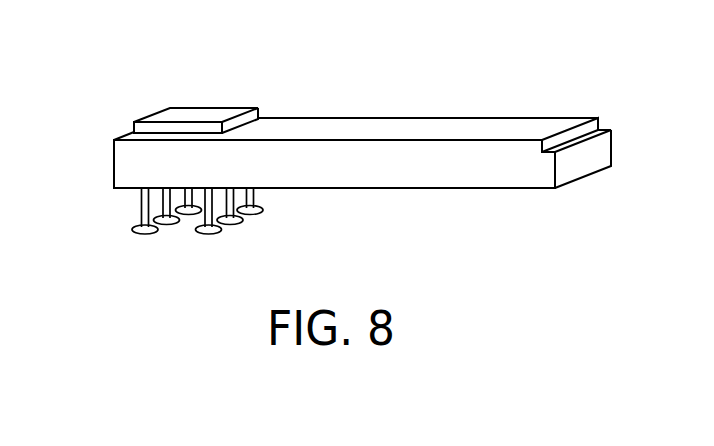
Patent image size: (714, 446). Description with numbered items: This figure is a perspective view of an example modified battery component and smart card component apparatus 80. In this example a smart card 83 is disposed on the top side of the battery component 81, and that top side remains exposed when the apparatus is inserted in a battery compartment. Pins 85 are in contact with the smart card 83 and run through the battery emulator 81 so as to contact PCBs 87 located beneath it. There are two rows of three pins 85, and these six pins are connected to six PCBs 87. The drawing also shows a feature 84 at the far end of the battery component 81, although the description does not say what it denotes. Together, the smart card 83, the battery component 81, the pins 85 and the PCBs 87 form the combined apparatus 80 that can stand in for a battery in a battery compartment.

The combined smart card component and battery component apparatus 80 is at (322, 80).
The battery component 81 is at (425, 125).
The smart card 83 is at (197, 117).
The step portion 84 is at (585, 130).
The pins 85 is at (141, 215).
The PCBs 87 is at (150, 234).